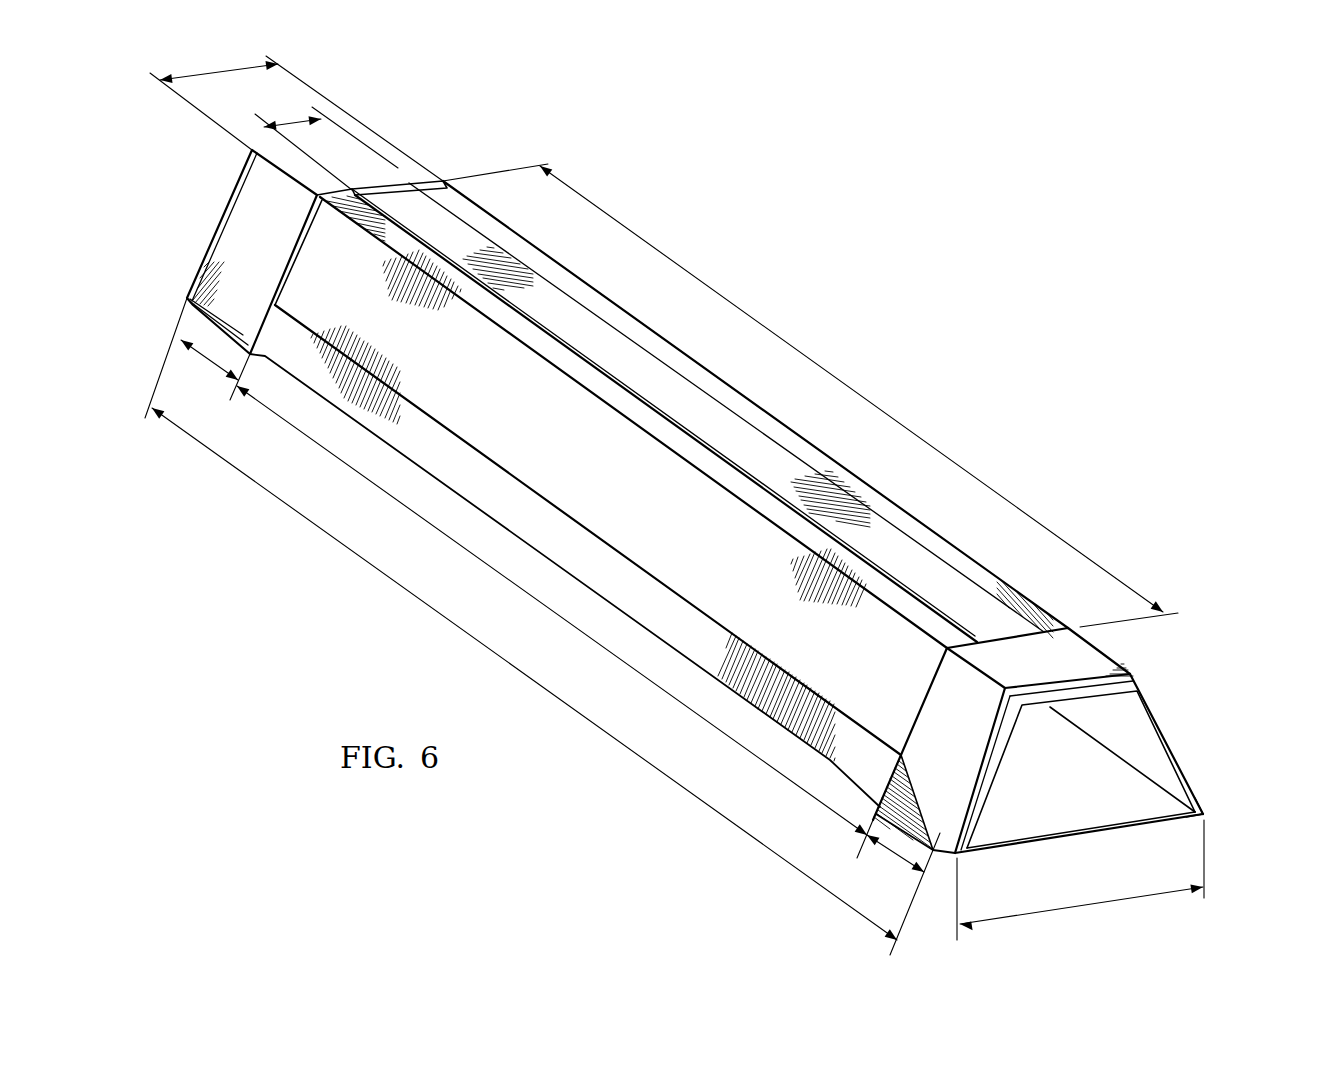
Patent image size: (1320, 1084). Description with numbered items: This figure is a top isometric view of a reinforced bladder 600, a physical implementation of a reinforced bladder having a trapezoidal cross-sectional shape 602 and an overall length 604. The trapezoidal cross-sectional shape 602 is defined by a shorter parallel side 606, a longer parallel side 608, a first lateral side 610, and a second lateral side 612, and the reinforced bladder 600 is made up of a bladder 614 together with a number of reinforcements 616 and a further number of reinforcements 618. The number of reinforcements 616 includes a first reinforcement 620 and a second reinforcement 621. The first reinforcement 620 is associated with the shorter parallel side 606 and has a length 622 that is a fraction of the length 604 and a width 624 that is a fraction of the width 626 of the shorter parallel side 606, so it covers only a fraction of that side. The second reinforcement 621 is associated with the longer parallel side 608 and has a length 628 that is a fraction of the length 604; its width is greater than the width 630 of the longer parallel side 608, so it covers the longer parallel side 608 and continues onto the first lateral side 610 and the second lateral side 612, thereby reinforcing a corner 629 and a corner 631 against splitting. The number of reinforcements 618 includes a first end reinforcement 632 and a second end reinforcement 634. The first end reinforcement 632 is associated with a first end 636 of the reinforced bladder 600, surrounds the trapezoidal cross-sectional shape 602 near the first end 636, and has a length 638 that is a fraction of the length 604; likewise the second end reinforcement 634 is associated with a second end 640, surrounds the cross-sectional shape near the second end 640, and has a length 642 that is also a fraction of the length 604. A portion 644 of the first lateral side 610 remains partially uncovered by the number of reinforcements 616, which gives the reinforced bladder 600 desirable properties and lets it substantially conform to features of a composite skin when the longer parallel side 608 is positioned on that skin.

The reinforced bladder 600 is at (783, 185).
The trapezoidal cross-sectional shape 602 is at (1098, 802).
The length 604 is at (527, 675).
The shorter parallel side 606 is at (1100, 690).
The longer parallel side 608 is at (1081, 835).
The first lateral side 610 is at (999, 772).
The second lateral side 612 is at (1172, 752).
The bladder 614 is at (648, 452).
The number of reinforcements 616 is at (927, 389).
The number of reinforcements 618 is at (548, 136).
The first reinforcement 620 is at (591, 311).
The second reinforcement 621 is at (637, 567).
The length 622 is at (847, 390).
The width 624 is at (299, 122).
The width 626 is at (229, 70).
The length 628 is at (553, 612).
The corner 629 is at (952, 858).
The width 630 is at (1088, 905).
The corner 631 is at (1206, 813).
The first end reinforcement 632 is at (412, 163).
The second end reinforcement 634 is at (931, 701).
The first end 636 is at (236, 187).
The length 638 is at (215, 370).
The second end 640 is at (1016, 846).
The length 642 is at (892, 853).
The portion 644 is at (318, 273).